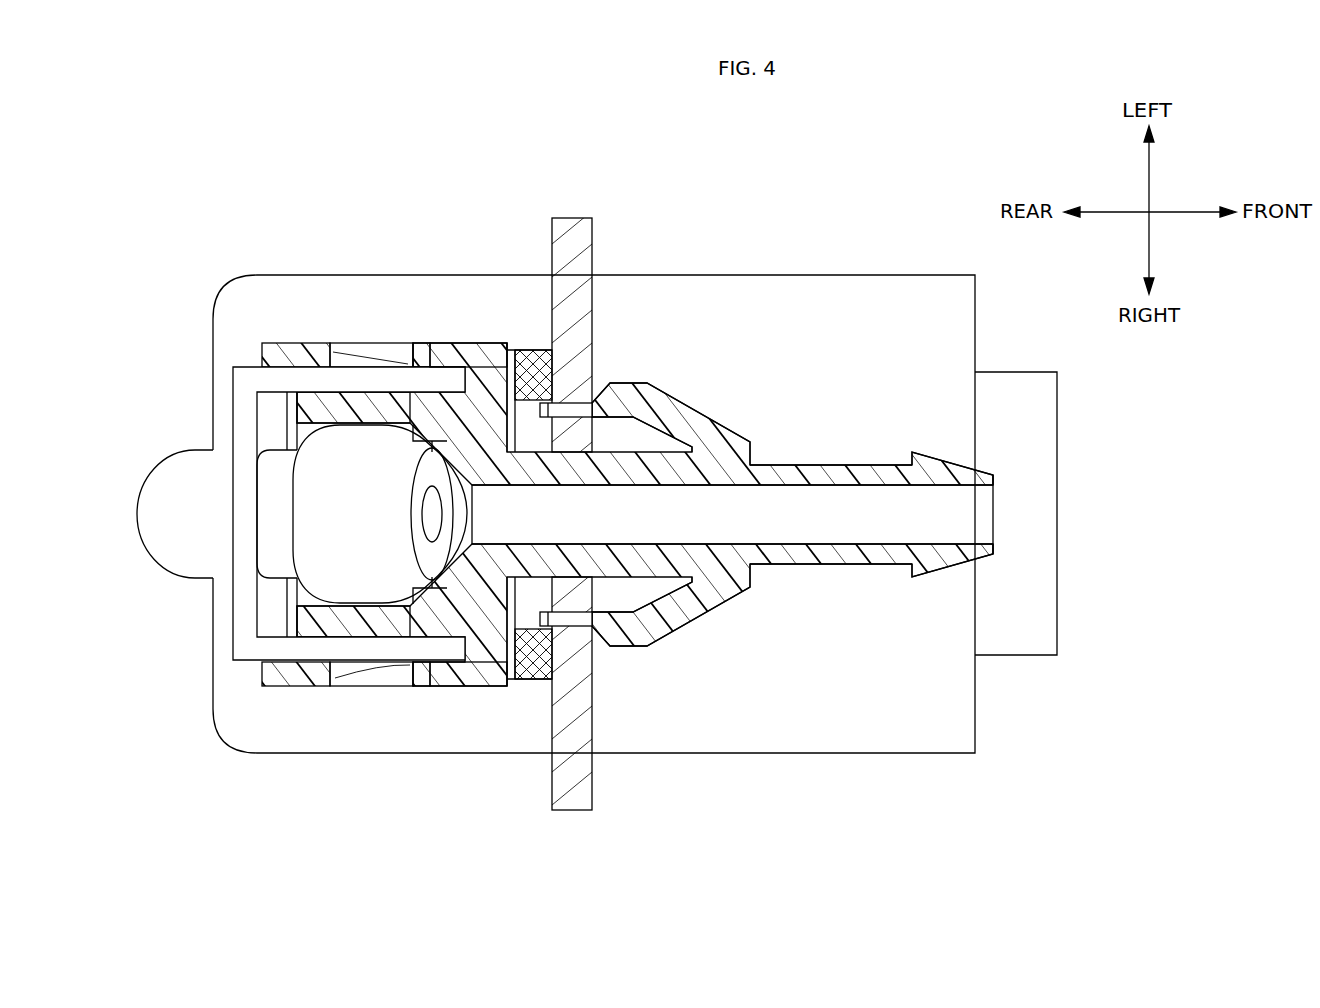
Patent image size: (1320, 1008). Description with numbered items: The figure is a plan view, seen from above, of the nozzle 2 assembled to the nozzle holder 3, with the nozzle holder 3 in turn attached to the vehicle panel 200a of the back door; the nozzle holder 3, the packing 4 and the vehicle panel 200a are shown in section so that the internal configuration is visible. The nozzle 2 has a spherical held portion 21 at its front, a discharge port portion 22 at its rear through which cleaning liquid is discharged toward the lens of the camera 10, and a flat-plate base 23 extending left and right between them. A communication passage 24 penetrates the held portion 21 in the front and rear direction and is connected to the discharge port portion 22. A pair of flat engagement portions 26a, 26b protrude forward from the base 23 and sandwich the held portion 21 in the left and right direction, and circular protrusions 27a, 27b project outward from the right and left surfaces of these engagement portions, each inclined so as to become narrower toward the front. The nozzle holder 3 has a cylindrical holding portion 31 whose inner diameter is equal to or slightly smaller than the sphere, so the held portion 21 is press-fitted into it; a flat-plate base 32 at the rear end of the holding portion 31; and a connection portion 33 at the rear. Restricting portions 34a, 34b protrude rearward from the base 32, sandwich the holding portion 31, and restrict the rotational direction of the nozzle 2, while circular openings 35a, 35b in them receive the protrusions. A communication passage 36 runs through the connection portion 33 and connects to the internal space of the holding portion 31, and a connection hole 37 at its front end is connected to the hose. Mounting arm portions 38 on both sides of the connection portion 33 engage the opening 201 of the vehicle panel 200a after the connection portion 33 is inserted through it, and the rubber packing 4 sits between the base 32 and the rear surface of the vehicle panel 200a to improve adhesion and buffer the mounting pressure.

The nozzle 2 is at (336, 512).
The nozzle holder 3 is at (621, 494).
The packing 4 is at (528, 665).
The camera 10 is at (833, 756).
The held portion 21 is at (337, 570).
The discharge port portion 22 is at (175, 467).
The base 23 is at (245, 603).
The communication passage 24 is at (432, 513).
The engagement portion 26a is at (290, 685).
The engagement portion 26b is at (280, 372).
The protrusion 27a is at (345, 686).
The protrusion 27b is at (350, 355).
The holding portion 31 is at (410, 410).
The base 32 is at (488, 427).
The connection portion 33 is at (857, 466).
The restricting portion 34a is at (435, 686).
The restricting portion 34b is at (443, 350).
The opening 35a is at (400, 686).
The opening 35b is at (402, 352).
The communication passage 36 is at (960, 518).
The connection hole 37 is at (935, 463).
The mounting arm portion 38 is at (680, 402).
The vehicle panel 200a is at (578, 785).
The opening 201 is at (578, 595).